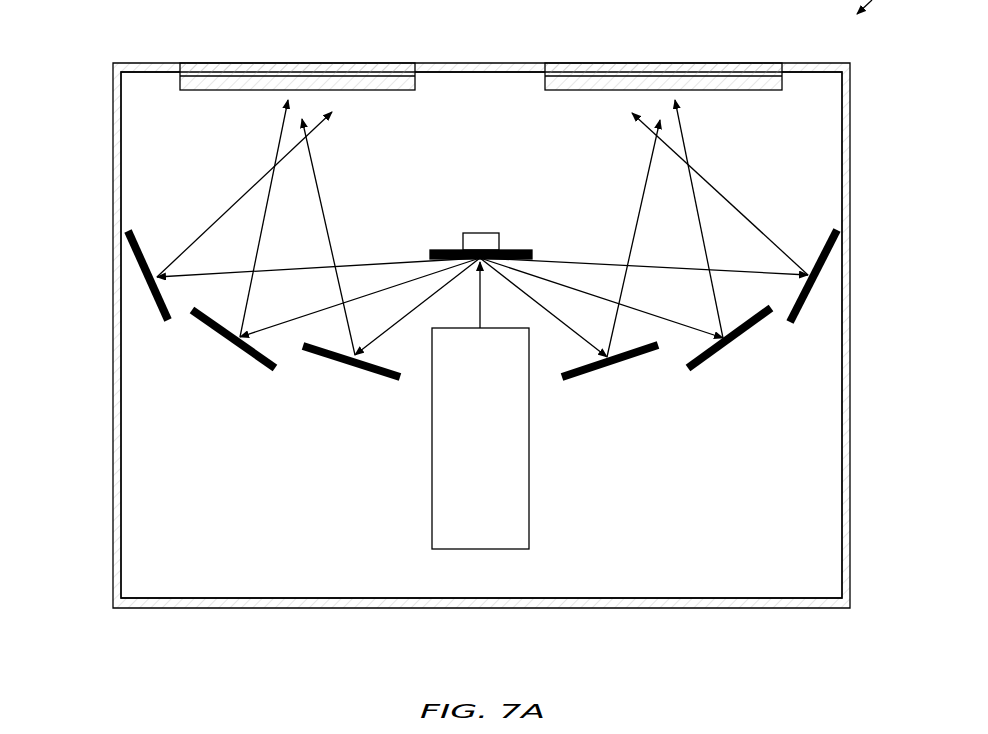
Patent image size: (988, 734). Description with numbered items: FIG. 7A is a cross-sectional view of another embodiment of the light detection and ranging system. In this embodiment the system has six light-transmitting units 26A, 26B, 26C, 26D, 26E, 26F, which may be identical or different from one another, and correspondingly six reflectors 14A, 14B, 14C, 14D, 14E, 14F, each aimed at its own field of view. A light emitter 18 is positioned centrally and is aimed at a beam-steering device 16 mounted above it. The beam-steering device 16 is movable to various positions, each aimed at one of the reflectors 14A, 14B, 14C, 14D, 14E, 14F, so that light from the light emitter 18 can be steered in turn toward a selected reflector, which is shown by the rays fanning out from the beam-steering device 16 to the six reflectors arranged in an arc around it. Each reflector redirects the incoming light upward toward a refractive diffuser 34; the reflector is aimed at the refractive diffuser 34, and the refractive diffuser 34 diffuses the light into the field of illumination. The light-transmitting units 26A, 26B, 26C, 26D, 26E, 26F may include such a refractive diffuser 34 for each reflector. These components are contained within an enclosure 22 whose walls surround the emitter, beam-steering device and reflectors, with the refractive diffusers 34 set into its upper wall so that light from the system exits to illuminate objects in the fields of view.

The first reflector 14A is at (157, 300).
The second reflector 14B is at (247, 357).
The reflector 14C is at (372, 372).
The reflector 14D is at (590, 375).
The reflector 14E is at (712, 355).
The reflector 14F is at (810, 297).
The beam-steering device 16 is at (513, 250).
The light emitter 18 is at (529, 508).
The housing 22 is at (851, 548).
The light-transmitting unit 26A is at (138, 284).
The light-transmitting unit 26B is at (213, 342).
The light-transmitting unit 26C is at (325, 372).
The light-transmitting unit 26D is at (637, 373).
The light-transmitting unit 26E is at (748, 342).
The light-transmitting unit 26F is at (825, 283).
The refractive diffuser 34 is at (225, 75).